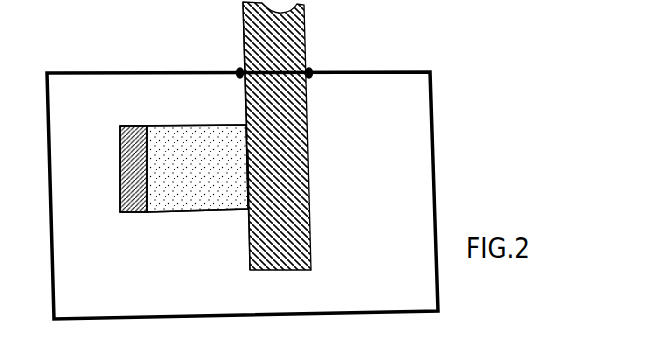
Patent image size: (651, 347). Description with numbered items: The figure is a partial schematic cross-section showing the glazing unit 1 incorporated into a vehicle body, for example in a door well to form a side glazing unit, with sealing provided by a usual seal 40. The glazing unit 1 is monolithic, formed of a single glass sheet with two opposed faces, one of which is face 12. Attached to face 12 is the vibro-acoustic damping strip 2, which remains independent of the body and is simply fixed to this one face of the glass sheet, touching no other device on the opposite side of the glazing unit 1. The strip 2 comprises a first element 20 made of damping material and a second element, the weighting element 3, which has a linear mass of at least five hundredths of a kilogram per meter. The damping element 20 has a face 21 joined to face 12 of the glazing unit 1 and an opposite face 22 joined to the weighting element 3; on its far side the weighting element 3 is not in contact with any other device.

The glazing unit 1 is at (290, 51).
The face of the glazing unit 12 is at (243, 24).
The strip 2 is at (146, 123).
The first element 20 is at (213, 148).
The face of the damping element 21 is at (248, 163).
The opposite face of the damping element 22 is at (145, 151).
The weighting element 3 is at (135, 185).
The seal 40 is at (316, 70).